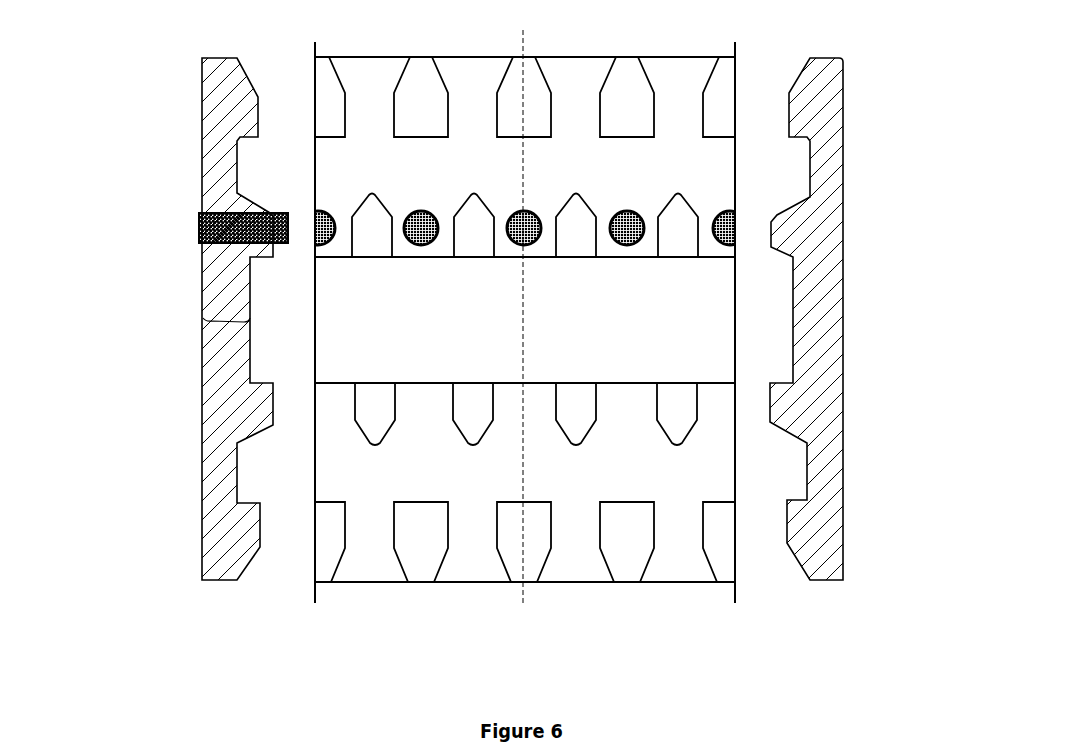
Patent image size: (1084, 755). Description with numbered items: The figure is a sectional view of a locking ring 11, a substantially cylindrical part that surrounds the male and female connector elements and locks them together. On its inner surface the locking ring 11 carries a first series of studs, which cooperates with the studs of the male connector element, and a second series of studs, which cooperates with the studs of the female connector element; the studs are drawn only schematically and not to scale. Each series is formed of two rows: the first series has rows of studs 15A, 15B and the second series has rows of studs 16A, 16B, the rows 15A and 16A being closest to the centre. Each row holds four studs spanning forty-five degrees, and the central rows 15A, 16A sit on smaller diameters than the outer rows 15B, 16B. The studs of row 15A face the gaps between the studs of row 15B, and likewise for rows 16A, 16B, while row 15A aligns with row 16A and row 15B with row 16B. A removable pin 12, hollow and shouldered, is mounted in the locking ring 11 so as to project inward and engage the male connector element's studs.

The locking ring 11 is at (818, 337).
The removable pin 12 is at (200, 215).
The row of studs 15A is at (585, 235).
The row of studs 15B is at (223, 113).
The row of studs 16A is at (243, 417).
The row of studs 16B is at (243, 525).